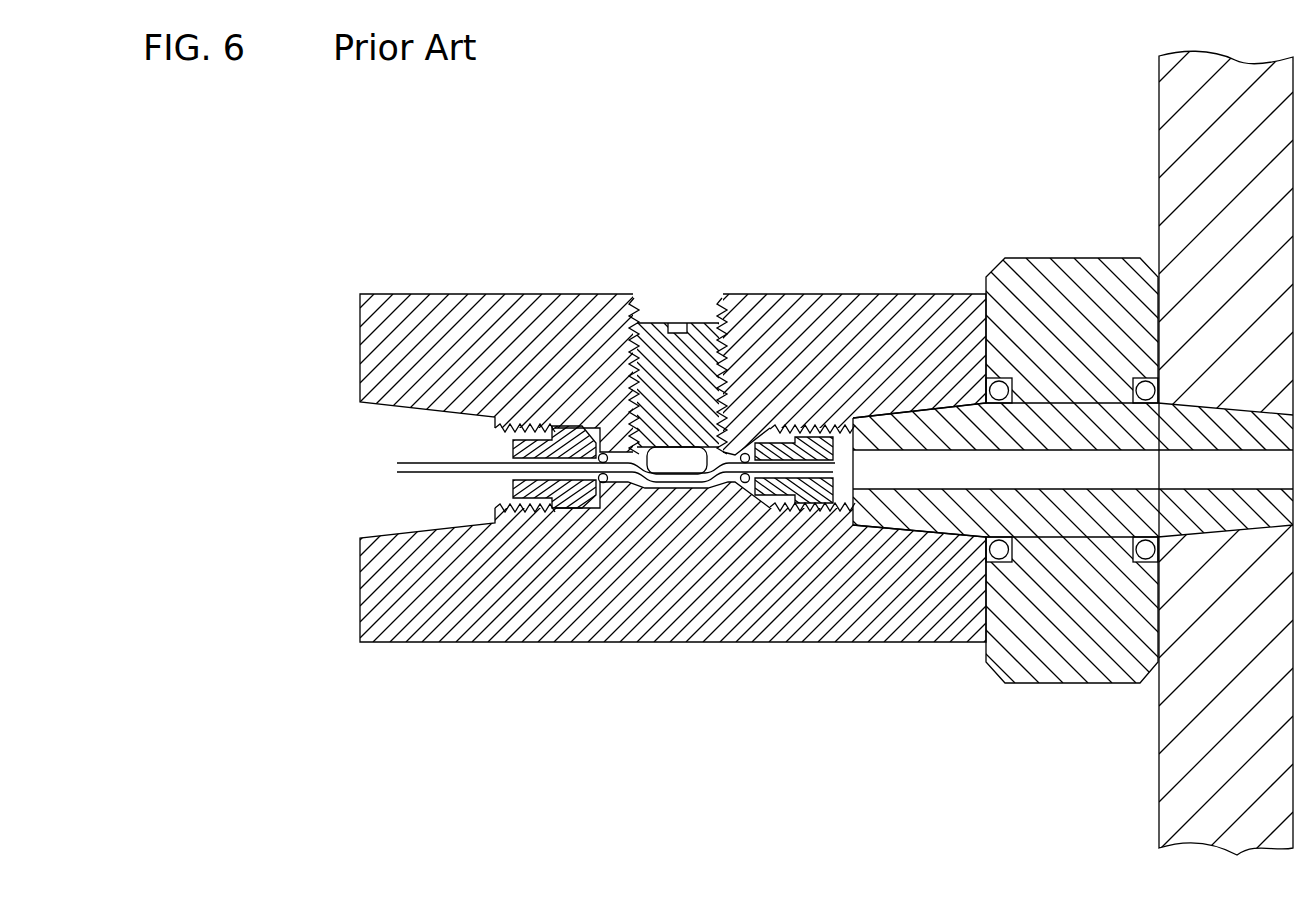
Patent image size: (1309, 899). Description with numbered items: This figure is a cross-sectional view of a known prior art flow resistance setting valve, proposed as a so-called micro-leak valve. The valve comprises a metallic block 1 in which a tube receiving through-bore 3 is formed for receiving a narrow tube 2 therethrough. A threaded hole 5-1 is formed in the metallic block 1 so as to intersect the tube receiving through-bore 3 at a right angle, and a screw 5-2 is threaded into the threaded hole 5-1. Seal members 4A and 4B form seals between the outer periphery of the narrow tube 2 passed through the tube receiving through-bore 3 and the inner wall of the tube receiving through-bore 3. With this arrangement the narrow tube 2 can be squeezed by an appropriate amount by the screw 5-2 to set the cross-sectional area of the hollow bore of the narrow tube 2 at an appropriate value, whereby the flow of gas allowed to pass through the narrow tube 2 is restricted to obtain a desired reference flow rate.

The metallic block 1 is at (881, 319).
The narrow tube 2 is at (417, 478).
The tube receiving through-bore 3 is at (670, 487).
The seal member 4A is at (607, 454).
The seal member 4B is at (747, 455).
The threaded hole 5-1 is at (658, 326).
The screw 5-2 is at (676, 355).